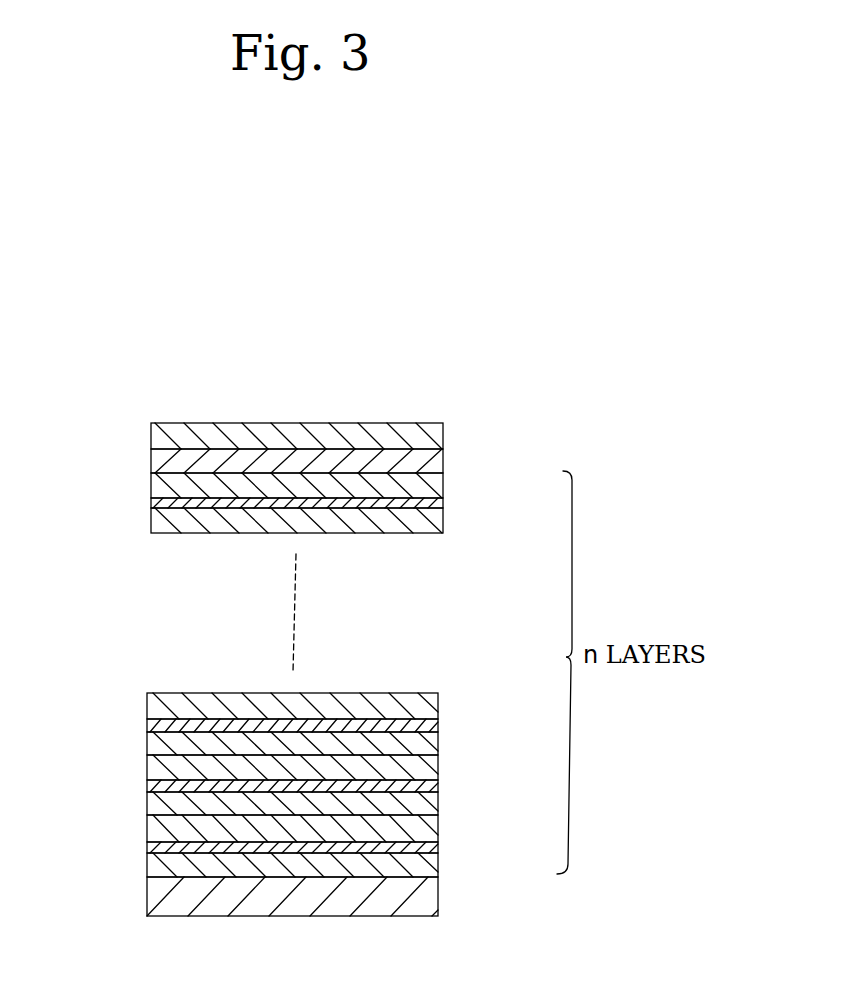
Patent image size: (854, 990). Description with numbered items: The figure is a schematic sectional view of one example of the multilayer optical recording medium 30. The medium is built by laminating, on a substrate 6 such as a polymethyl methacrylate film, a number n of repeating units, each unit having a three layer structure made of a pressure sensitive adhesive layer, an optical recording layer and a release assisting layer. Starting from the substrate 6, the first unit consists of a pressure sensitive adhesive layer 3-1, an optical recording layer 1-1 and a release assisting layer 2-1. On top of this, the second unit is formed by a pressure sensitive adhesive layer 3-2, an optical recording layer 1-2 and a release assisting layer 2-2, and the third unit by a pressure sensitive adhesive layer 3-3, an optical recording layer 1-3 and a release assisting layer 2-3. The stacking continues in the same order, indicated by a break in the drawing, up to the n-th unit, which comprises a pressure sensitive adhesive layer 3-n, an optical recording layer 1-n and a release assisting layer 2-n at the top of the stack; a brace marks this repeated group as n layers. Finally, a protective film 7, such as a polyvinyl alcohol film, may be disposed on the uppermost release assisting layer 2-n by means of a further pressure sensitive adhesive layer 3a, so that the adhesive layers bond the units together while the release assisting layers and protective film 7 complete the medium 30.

The multilayer optical recording medium 30 is at (406, 392).
The protective film 7 is at (436, 437).
The pressure sensitive adhesive layer 3a is at (440, 463).
The optical recording layer 1-n is at (440, 500).
The release assisting layer 2-n is at (152, 490).
The pressure sensitive adhesive layer 3-n is at (432, 517).
The release assisting layer 2-3 is at (149, 703).
The pressure sensitive adhesive layer 3-3 is at (440, 735).
The optical recording layer 1-3 is at (432, 723).
The release assisting layer 2-2 is at (149, 770).
The pressure sensitive adhesive layer 3-2 is at (440, 797).
The optical recording layer 1-2 is at (432, 785).
The release assisting layer 2-1 is at (149, 830).
The pressure sensitive adhesive layer 3-1 is at (438, 858).
The optical recording layer 1-1 is at (432, 847).
The substrate 6 is at (430, 900).